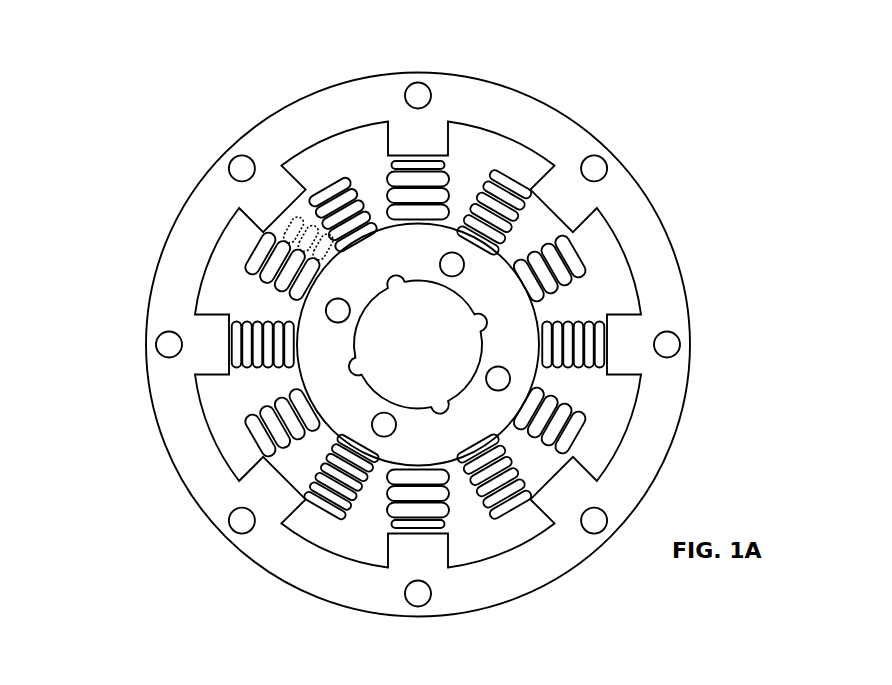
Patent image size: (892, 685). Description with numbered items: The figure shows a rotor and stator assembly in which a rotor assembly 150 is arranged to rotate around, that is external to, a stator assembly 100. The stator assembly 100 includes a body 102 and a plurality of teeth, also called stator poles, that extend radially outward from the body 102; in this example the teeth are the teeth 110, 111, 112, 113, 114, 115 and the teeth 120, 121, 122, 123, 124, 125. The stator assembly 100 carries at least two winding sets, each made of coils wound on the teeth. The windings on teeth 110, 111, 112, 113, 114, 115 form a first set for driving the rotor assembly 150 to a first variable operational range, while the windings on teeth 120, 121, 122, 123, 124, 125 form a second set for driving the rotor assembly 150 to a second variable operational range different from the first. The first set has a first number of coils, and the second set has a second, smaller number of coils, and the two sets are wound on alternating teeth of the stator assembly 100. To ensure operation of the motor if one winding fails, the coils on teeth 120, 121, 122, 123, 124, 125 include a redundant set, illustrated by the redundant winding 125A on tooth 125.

The stator assembly 100 is at (403, 353).
The body 102 is at (313, 325).
The tooth 110 is at (332, 222).
The tooth 111 is at (492, 196).
The tooth 112 is at (572, 345).
The tooth 113 is at (497, 480).
The tooth 114 is at (340, 473).
The tooth 115 is at (260, 348).
The tooth 120 is at (430, 183).
The tooth 121 is at (557, 266).
The tooth 122 is at (562, 415).
The tooth 123 is at (416, 507).
The tooth 124 is at (303, 403).
The tooth 125 is at (270, 256).
The redundant winding 125A is at (312, 298).
The rotor assembly 150 is at (223, 505).